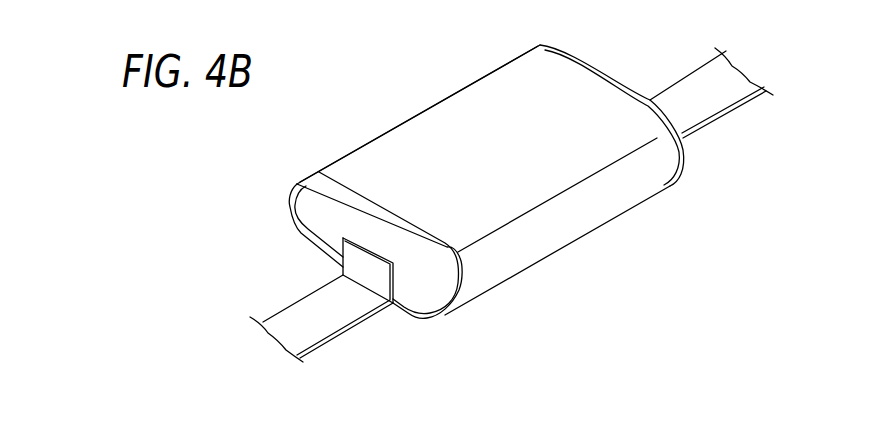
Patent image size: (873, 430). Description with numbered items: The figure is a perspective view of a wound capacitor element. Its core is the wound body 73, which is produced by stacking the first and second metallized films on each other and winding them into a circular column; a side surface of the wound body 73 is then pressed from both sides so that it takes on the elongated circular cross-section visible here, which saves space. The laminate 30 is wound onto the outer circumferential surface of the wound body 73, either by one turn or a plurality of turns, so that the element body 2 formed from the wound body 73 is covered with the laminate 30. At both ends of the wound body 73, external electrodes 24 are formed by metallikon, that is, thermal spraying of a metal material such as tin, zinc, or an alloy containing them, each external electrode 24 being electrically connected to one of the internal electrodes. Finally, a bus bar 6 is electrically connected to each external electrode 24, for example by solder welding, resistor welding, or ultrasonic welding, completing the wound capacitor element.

The element body 2 is at (565, 220).
The bus bar 6 is at (298, 317).
The external electrode 24 is at (453, 285).
The laminate 30 is at (485, 98).
The wound body 73 is at (452, 117).